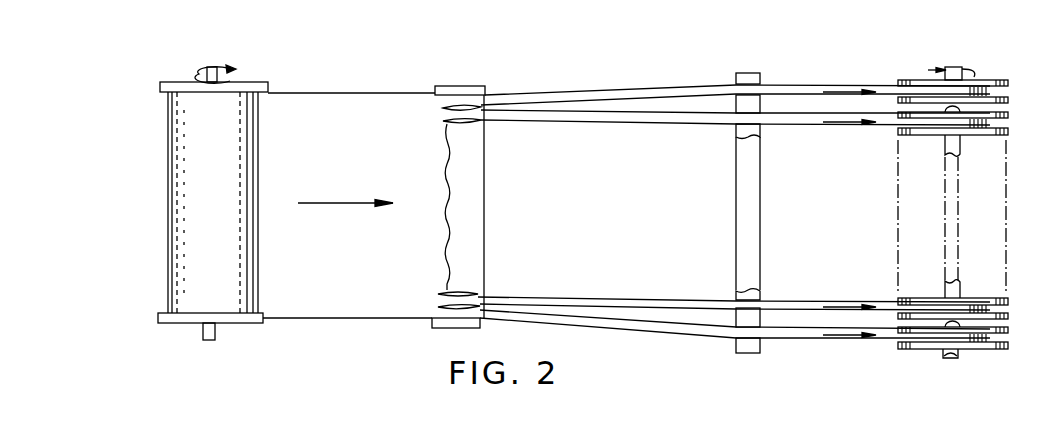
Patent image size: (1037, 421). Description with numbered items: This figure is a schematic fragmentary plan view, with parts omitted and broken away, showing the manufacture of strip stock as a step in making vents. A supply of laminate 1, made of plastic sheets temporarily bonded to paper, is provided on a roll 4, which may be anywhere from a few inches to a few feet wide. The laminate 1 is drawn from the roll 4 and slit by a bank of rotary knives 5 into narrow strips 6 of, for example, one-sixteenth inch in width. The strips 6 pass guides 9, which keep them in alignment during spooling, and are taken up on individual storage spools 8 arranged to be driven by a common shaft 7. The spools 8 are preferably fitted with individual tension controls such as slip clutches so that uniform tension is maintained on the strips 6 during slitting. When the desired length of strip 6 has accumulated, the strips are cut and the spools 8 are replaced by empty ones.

The laminate 1 is at (368, 82).
The roll 4 is at (160, 186).
The bank of rotary knives 5 is at (478, 124).
The strips 6 is at (687, 86).
The common shaft 7 is at (943, 147).
The individual storage spools 8 is at (990, 80).
The guides 9 is at (761, 83).